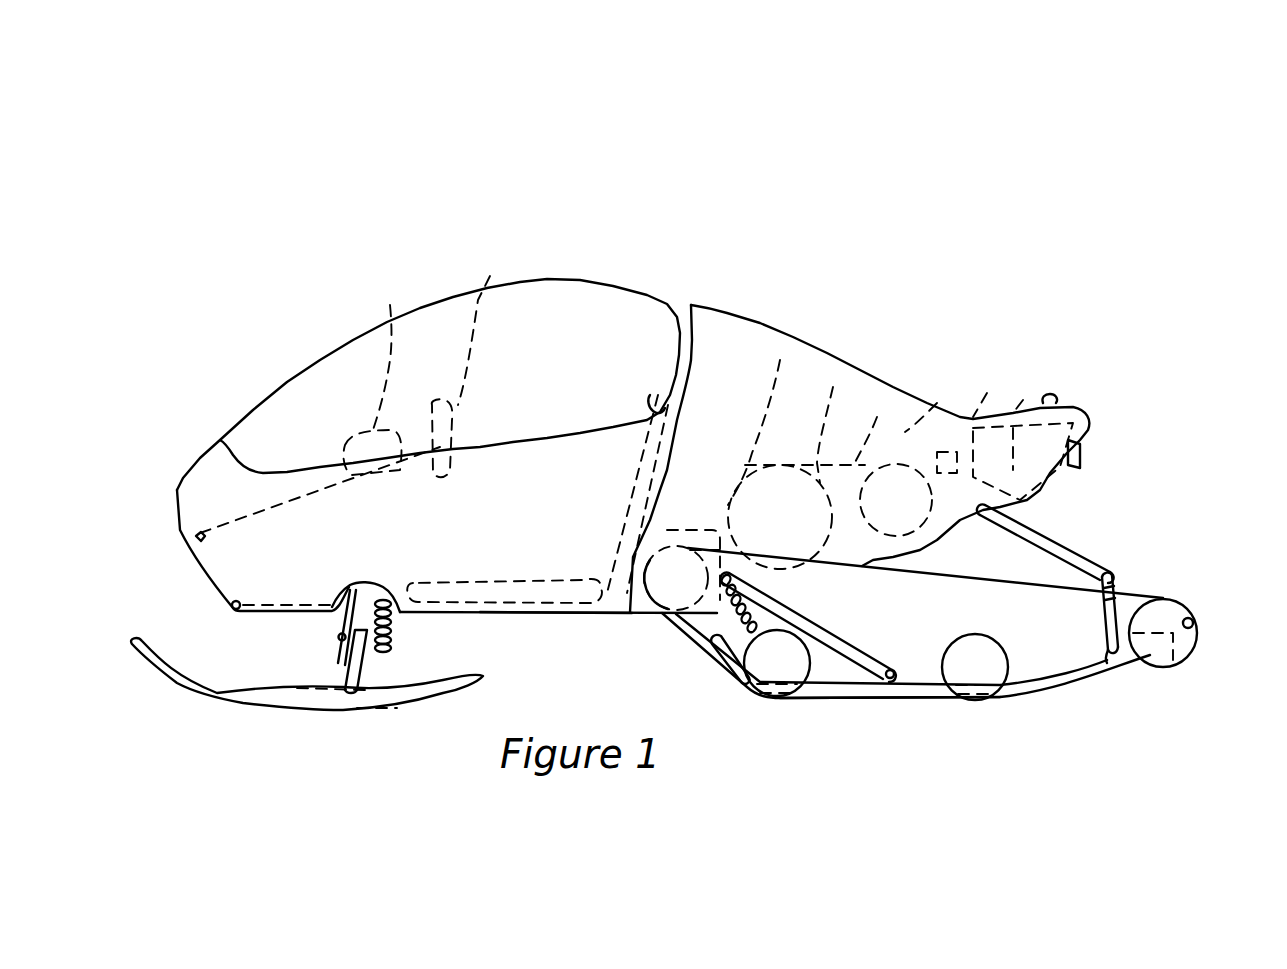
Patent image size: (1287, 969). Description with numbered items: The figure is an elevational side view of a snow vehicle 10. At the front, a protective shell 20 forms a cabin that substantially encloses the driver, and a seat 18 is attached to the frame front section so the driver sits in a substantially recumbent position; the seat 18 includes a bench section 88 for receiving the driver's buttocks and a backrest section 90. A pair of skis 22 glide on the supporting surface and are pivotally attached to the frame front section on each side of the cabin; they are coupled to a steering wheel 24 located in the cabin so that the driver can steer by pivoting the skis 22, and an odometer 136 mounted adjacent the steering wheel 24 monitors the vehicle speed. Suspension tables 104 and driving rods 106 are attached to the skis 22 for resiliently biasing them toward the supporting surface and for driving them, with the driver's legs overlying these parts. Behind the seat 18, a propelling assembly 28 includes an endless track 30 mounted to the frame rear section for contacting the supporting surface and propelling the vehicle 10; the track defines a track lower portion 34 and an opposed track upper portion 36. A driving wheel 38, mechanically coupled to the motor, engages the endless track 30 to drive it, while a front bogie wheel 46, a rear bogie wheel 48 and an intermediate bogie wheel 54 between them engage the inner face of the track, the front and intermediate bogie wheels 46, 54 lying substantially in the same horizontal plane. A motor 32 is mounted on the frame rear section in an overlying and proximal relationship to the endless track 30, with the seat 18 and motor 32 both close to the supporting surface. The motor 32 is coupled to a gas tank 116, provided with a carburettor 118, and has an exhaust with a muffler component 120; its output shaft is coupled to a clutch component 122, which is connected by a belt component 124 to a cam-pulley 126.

The vehicle 10 is at (650, 145).
The seat 18 is at (573, 626).
The protective shell 20 is at (300, 393).
The skis 22 is at (272, 703).
The steering wheel 24 is at (490, 276).
The propelling assembly 28 is at (1102, 532).
The endless track 30 is at (1131, 593).
The motor 32 is at (937, 403).
The track lower portion 34 is at (876, 737).
The track upper portion 36 is at (1000, 564).
The driving wheel 38 is at (663, 620).
The front bogie wheel 46 is at (787, 682).
The rear bogie wheel 48 is at (1193, 627).
The intermediate bogie wheel 54 is at (997, 677).
The bench section 88 is at (549, 664).
The backrest section 90 is at (691, 305).
The suspension tables 104 is at (388, 638).
The driving rods 106 is at (342, 637).
The gas tank 116 is at (1023, 400).
The carburettor 118 is at (987, 393).
The muffler component 120 is at (1083, 443).
The clutch component 122 is at (877, 417).
The belt component 124 is at (833, 387).
The cam-pulley 126 is at (780, 360).
The odometer 136 is at (389, 316).